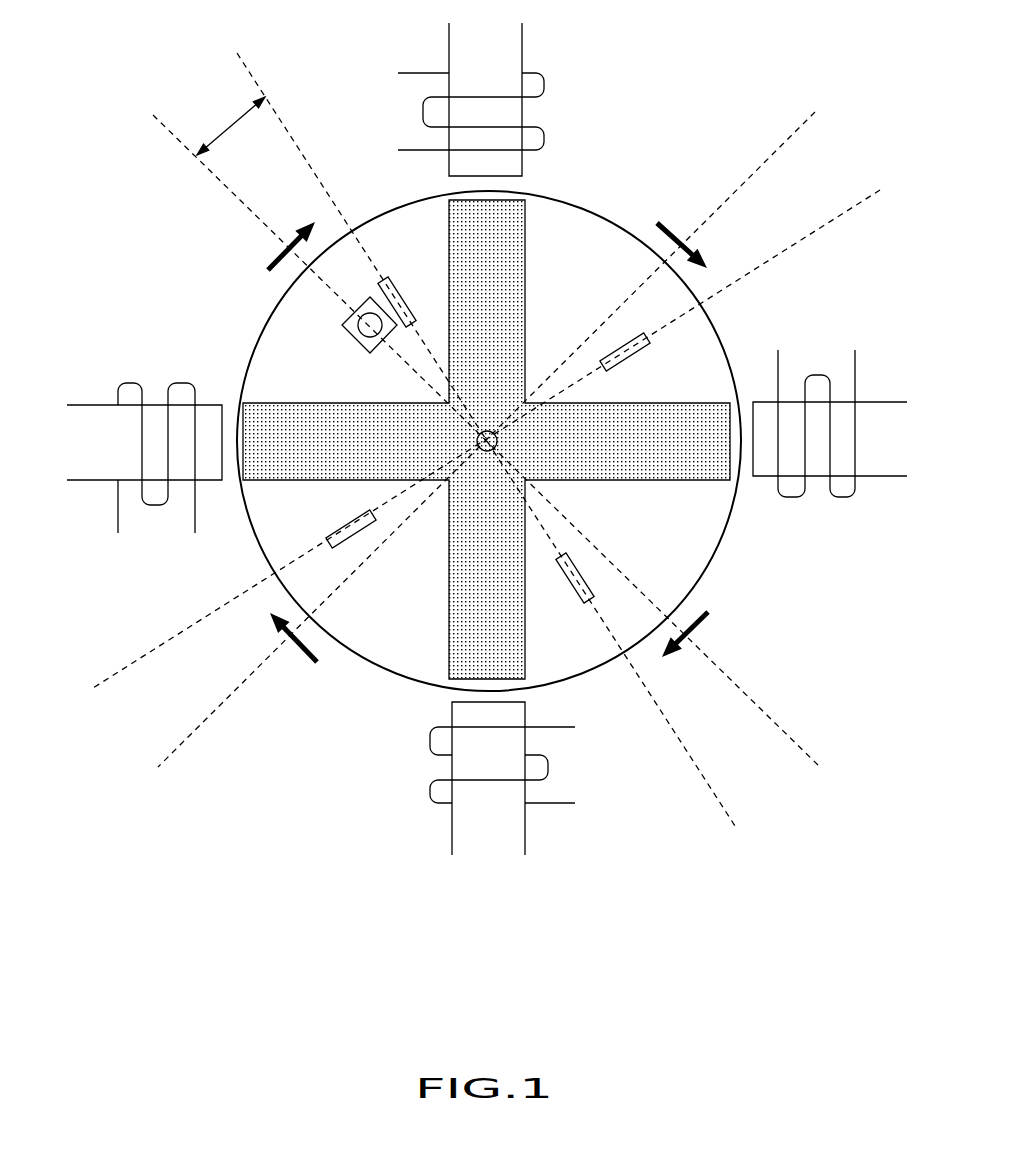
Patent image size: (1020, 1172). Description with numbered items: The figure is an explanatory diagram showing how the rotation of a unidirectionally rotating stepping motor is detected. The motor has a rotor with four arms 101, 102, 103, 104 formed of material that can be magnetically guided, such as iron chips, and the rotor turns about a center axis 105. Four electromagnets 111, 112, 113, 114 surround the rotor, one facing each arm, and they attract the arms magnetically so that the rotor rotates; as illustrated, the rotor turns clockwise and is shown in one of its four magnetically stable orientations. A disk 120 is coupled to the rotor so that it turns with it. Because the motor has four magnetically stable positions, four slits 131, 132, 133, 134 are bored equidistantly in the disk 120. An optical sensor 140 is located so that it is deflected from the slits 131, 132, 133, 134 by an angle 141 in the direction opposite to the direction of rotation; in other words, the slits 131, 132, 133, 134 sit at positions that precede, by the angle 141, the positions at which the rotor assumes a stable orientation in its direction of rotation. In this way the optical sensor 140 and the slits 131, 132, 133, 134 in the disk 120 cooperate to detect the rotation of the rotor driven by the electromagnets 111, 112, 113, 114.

The arm 101 is at (513, 258).
The arm 102 is at (683, 463).
The arm 103 is at (510, 652).
The arm 104 is at (272, 418).
The center axis 105 is at (480, 455).
The electromagnet 111 is at (512, 38).
The electromagnet 112 is at (888, 467).
The electromagnet 113 is at (513, 848).
The electromagnet 114 is at (77, 468).
The disk 120 is at (703, 357).
The slit 131 is at (387, 280).
The slit 132 is at (643, 333).
The slit 133 is at (593, 580).
The slit 134 is at (357, 537).
The optical sensor 140 is at (340, 325).
The angle 141 is at (228, 120).